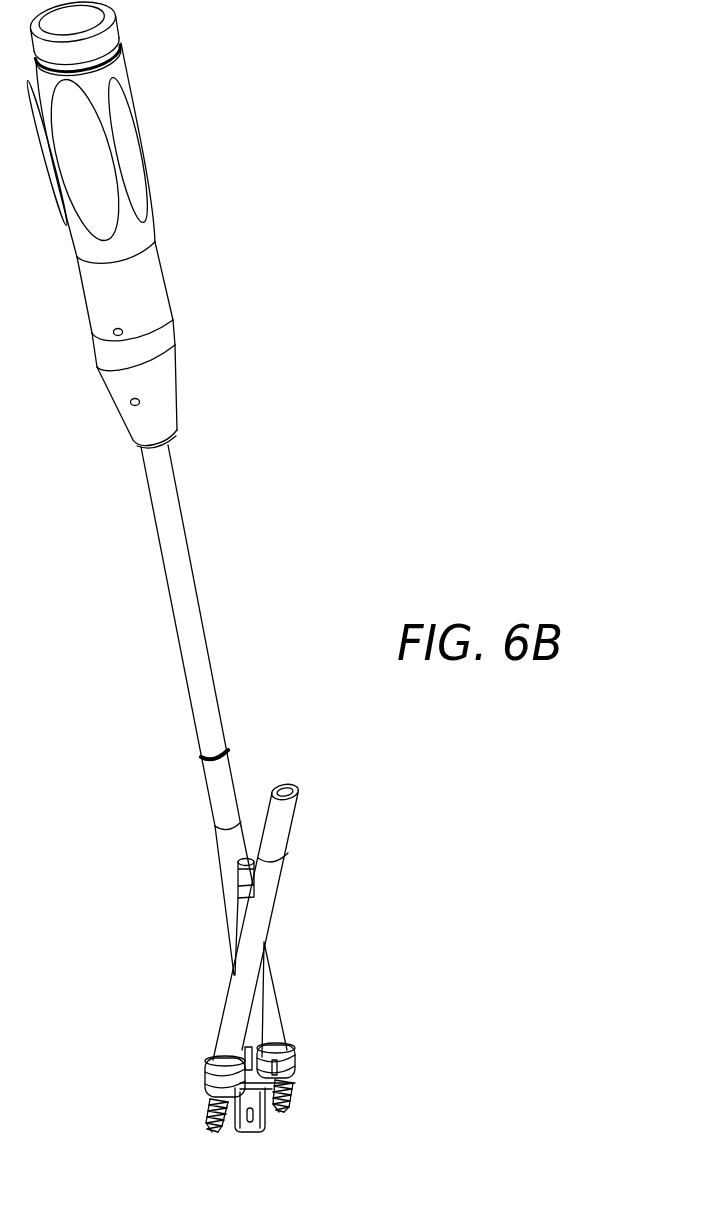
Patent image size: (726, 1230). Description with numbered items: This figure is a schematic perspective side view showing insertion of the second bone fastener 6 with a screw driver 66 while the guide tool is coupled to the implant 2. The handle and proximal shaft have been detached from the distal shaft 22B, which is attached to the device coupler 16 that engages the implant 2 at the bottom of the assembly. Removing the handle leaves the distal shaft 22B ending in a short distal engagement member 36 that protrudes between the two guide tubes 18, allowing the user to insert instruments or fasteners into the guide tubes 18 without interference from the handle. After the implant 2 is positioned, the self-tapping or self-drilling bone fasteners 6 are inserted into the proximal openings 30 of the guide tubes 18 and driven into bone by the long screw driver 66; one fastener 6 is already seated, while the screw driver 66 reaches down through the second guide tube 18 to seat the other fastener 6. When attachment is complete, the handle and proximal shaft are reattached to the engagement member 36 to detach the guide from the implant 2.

The screw driver 66 is at (152, 622).
The proximal opening 30 is at (205, 757).
The guide tube 18 is at (250, 990).
The engagement member 36 is at (243, 880).
The distal shaft 22B is at (253, 1037).
The device coupler 16 is at (302, 1052).
The implant 2 is at (277, 1134).
The bone fastener 6 is at (200, 1117).